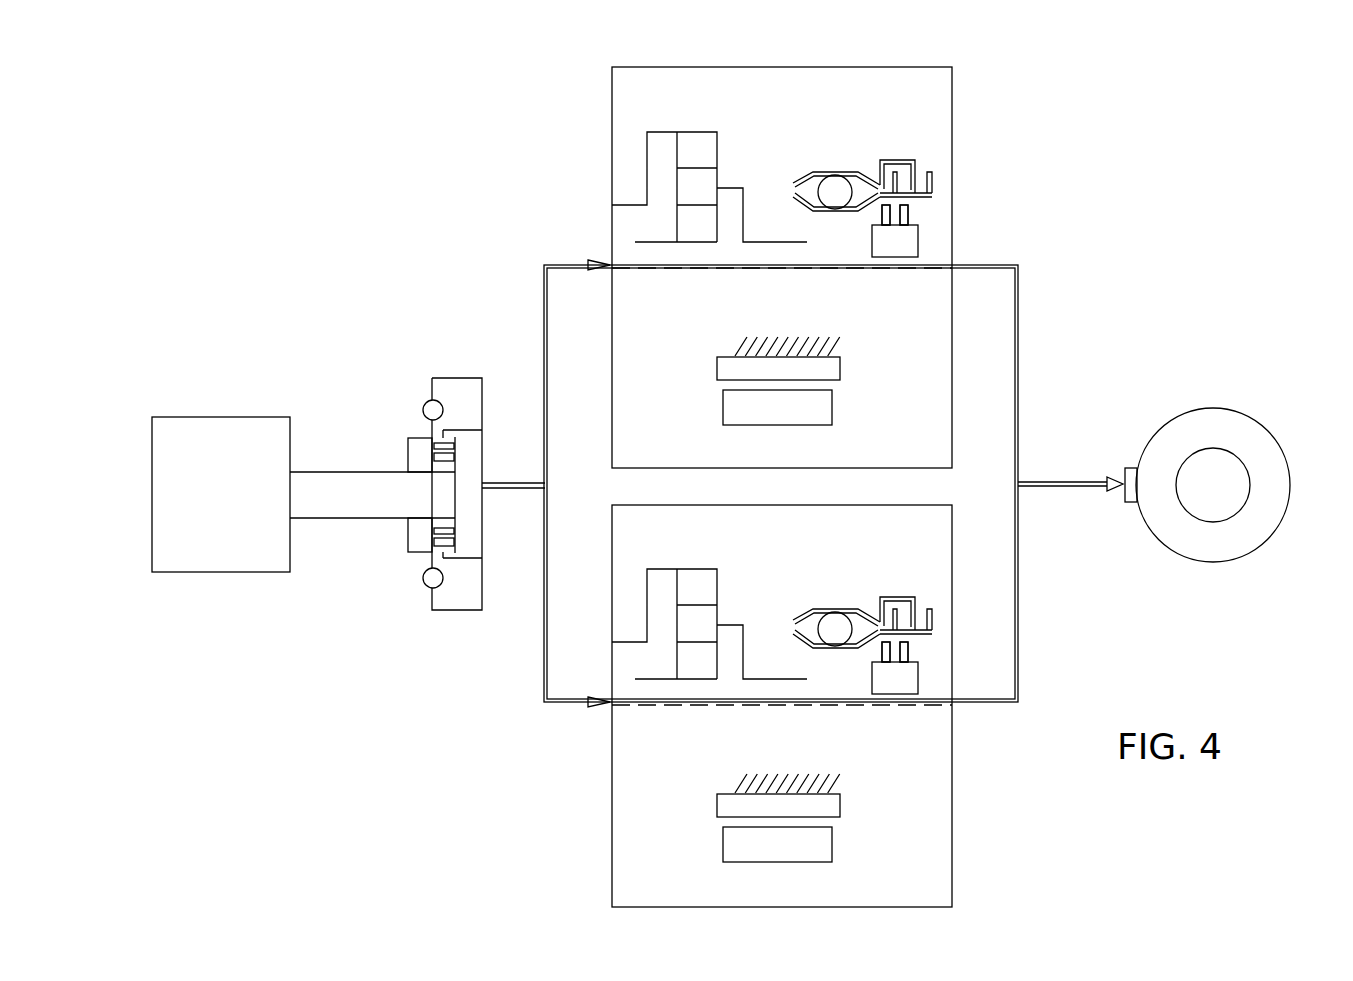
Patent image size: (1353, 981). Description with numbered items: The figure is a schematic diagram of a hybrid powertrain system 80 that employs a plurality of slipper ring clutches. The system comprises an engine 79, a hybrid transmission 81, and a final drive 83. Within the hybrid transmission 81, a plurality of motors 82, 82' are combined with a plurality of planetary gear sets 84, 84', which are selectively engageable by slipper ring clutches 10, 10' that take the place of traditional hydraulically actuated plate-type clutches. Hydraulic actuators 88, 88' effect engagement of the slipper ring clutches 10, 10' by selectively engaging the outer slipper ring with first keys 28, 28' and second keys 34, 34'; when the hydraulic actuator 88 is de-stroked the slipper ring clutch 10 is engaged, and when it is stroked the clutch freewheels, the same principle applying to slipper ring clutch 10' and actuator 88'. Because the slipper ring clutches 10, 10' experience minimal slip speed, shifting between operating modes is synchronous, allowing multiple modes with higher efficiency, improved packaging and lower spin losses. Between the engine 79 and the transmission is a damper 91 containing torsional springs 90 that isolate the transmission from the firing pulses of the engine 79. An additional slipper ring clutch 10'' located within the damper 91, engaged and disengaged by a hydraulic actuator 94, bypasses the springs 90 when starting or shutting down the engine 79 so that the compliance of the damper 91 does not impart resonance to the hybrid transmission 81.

The slipper ring clutch 10 is at (852, 151).
The slipper ring clutch 10' is at (850, 589).
The slipper ring clutch 10'' is at (501, 426).
The first key 28 is at (870, 223).
The first key 28' is at (868, 660).
The second key 34 is at (935, 206).
The second key 34' is at (938, 644).
The engine 79 is at (221, 494).
The hybrid powertrain system 80 is at (530, 128).
The hybrid transmission 81 is at (1002, 238).
The motor 82 is at (809, 381).
The motor 82' is at (809, 818).
The final drive 83 is at (1240, 410).
The planetary gear set 84 is at (709, 187).
The planetary gear set 84' is at (710, 624).
The hydraulic actuator 88 is at (895, 241).
The hydraulic actuator 88' is at (895, 678).
The torsional springs 90 is at (423, 408).
The damper 91 is at (461, 362).
The hydraulic actuator 94 is at (408, 453).